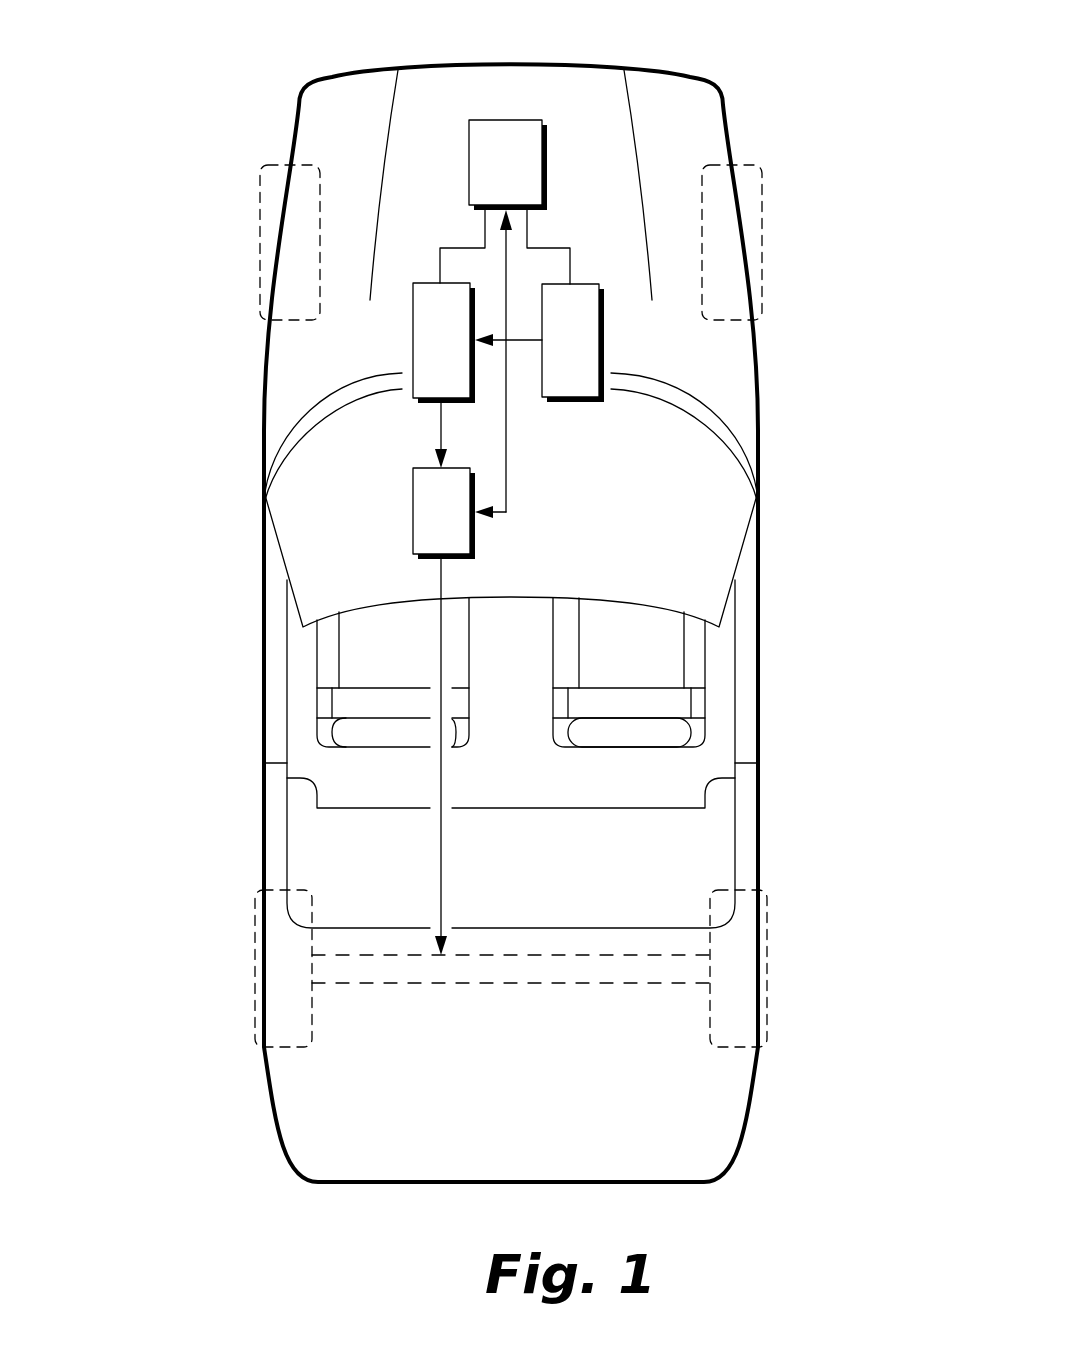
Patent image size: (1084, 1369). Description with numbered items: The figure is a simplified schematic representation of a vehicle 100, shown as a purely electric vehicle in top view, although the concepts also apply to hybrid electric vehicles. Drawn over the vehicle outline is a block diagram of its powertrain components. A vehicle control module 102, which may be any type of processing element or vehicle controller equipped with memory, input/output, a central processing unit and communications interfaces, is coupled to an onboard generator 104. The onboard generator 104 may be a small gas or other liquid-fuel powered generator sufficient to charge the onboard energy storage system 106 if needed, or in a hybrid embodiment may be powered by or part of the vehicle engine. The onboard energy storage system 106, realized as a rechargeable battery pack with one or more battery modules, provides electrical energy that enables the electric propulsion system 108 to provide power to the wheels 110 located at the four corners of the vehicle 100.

The vehicle 100 is at (207, 73).
The vehicle control module 102 is at (498, 119).
The onboard generator 104 is at (576, 403).
The onboard energy storage system 106 is at (413, 327).
The electric propulsion system 108 is at (413, 507).
The wheels 110 is at (262, 170).